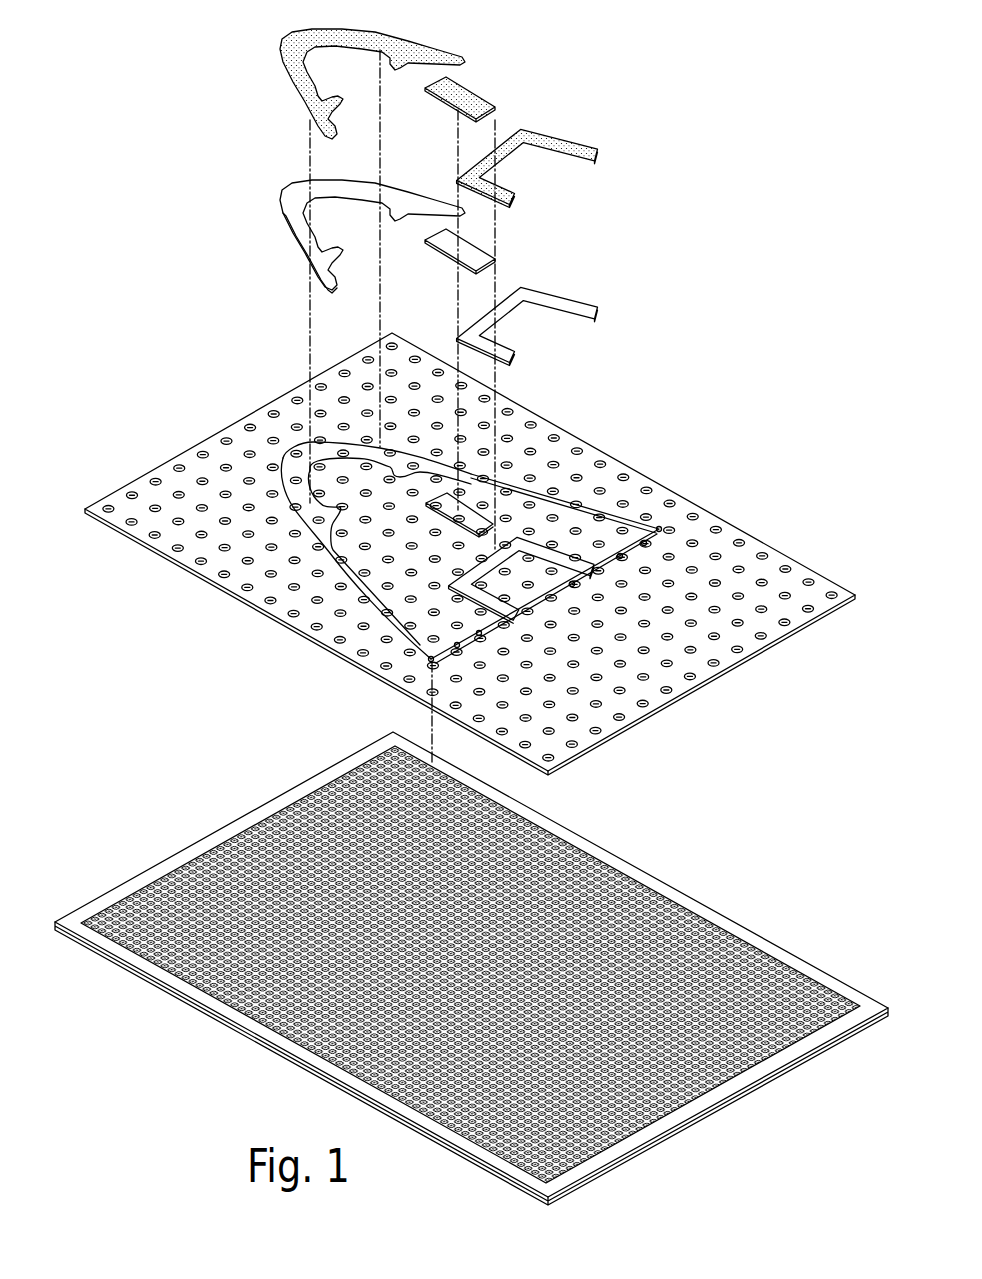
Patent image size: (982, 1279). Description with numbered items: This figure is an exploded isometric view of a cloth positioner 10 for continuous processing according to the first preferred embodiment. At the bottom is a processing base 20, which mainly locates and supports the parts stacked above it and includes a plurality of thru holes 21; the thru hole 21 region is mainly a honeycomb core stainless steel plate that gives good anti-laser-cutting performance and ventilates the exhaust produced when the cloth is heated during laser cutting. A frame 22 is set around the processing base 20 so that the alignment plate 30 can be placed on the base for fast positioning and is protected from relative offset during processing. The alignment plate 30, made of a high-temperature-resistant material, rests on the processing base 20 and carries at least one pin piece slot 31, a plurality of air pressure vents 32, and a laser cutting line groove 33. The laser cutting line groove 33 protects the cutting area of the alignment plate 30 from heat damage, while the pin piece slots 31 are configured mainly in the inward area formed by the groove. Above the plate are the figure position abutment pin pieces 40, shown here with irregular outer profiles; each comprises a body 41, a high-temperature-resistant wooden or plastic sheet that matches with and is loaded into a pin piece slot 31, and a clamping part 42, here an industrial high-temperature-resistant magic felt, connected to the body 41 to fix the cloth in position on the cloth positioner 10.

The cloth positioner 10 is at (714, 171).
The processing base 20 is at (246, 1052).
The thru holes 21 is at (212, 849).
The frame 22 is at (629, 873).
The alignment plate 30 is at (230, 609).
The pin piece slot 31 is at (288, 459).
The air pressure vents 32 is at (178, 485).
The laser cutting line groove 33 is at (507, 474).
The figure position abutment pin piece 40 is at (234, 35).
The body 41 is at (292, 220).
The clamping part 42 is at (443, 45).